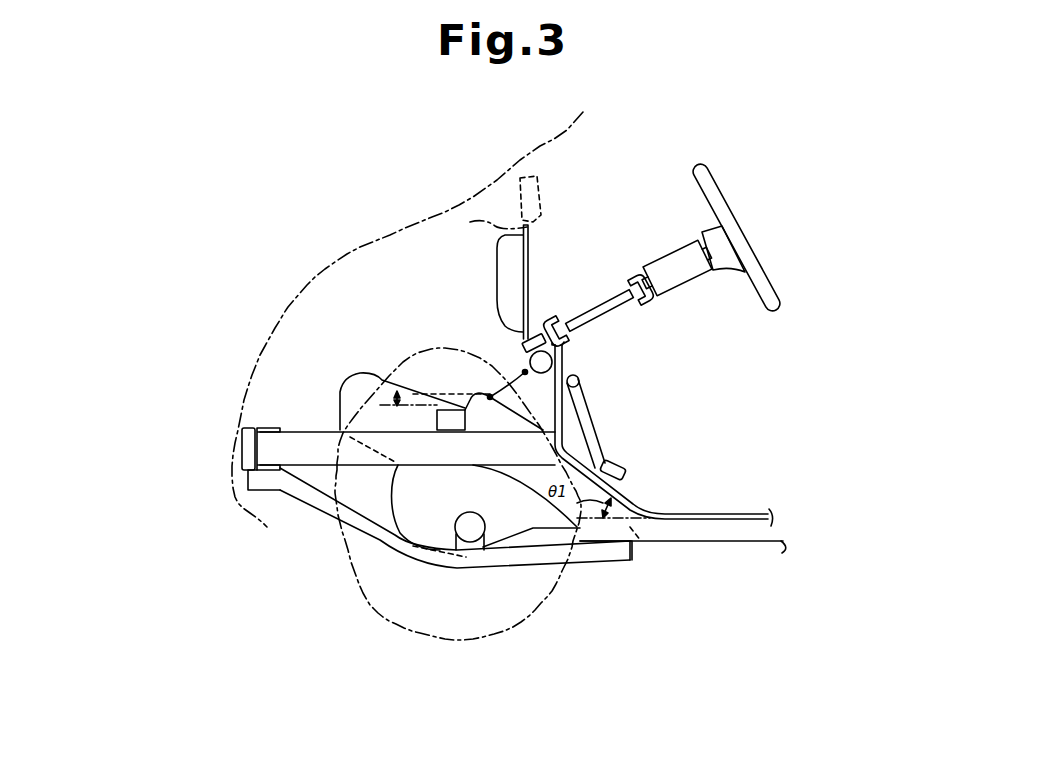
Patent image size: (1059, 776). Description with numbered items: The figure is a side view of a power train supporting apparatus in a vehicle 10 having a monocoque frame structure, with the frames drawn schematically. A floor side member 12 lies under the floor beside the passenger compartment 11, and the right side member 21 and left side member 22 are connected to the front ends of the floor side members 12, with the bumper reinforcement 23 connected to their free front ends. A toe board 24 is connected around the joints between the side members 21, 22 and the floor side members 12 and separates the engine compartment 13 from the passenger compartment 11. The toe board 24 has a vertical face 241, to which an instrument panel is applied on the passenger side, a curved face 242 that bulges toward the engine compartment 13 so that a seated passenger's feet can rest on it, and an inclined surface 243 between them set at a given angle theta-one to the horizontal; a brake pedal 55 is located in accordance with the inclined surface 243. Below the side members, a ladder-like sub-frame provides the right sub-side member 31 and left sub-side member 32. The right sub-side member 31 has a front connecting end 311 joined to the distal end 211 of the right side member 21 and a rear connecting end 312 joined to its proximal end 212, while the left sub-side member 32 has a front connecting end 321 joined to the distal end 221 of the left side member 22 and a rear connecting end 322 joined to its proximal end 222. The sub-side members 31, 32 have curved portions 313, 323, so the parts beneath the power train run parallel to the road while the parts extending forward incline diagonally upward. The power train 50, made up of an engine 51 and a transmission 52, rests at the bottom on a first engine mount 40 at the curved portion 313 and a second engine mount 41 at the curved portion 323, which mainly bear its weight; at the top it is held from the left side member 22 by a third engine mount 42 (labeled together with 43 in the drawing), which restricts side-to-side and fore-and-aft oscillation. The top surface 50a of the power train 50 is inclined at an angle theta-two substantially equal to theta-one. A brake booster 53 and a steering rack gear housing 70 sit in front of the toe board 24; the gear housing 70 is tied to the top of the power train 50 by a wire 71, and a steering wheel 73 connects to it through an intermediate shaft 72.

The vehicle 10 is at (513, 150).
The passenger compartment 11 is at (721, 388).
The floor side member 12 is at (742, 541).
The engine compartment 13 is at (412, 304).
The right side member 21 is at (406, 449).
The left side member 22 is at (406, 449).
The bumper reinforcement 23 is at (250, 428).
The toe board 24 is at (662, 469).
The vertical face 241 is at (530, 248).
The curved face 242 is at (642, 508).
The inclined surface 243 is at (570, 450).
The distal end 211 is at (258, 449).
The distal end 221 is at (201, 455).
The proximal end 212 is at (623, 528).
The proximal end 222 is at (649, 562).
The right sub-side member 31 is at (468, 555).
The left sub-side member 32 is at (468, 555).
The front connecting end 311 is at (268, 492).
The front connecting end 321 is at (287, 526).
The rear connecting end 312 is at (603, 561).
The rear connecting end 322 is at (625, 594).
The curved portion 313 is at (469, 591).
The curved portion 323 is at (469, 591).
The first engine mount 40 is at (485, 507).
The second engine mount 41 is at (455, 520).
The third engine mount 42 is at (360, 382).
The upper connecting member 43 is at (437, 422).
The power train 50 is at (432, 481).
The top surface 50a is at (360, 373).
The engine 51 is at (437, 408).
The transmission 52 is at (528, 527).
The brake booster 53 is at (497, 272).
The brake pedal 55 is at (579, 380).
The steering rack gear housing 70 is at (530, 361).
The wire 71 is at (510, 378).
The intermediate shaft 72 is at (603, 315).
The steering wheel 73 is at (730, 193).